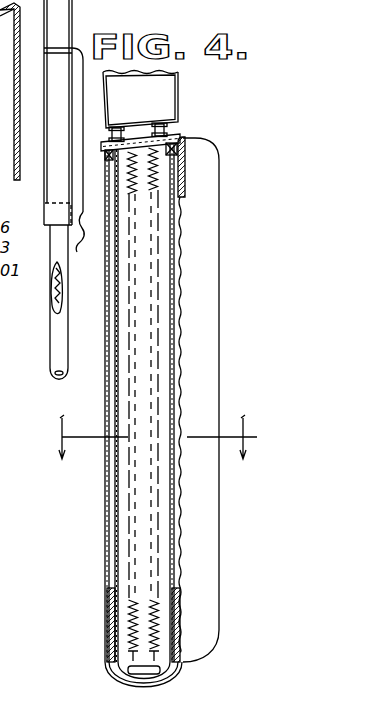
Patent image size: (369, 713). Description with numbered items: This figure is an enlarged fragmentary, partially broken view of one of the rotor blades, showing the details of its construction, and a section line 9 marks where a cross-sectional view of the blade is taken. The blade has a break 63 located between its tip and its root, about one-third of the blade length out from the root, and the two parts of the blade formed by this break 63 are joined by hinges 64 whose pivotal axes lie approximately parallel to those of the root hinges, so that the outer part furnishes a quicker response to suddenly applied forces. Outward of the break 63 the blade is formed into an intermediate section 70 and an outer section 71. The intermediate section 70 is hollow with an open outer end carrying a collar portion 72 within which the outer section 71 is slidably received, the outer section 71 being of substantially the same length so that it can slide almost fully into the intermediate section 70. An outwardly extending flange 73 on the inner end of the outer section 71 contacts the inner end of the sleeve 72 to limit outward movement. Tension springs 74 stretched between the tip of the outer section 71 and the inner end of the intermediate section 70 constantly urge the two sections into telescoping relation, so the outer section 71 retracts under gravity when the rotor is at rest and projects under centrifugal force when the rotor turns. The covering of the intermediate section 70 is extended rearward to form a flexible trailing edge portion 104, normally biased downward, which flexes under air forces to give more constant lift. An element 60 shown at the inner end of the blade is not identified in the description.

The filament block / header 60 is at (181, 91).
The mounting plate 63 is at (180, 131).
The support posts 64 is at (164, 122).
The outer tube 70 is at (105, 400).
The inner tube 71 is at (113, 495).
The bottom plug 72 is at (108, 628).
The lead wires 73 is at (180, 153).
The heating coils 74 is at (132, 642).
The outer casing 104 is at (145, 355).
The section line 9- 9 is at (154, 449).